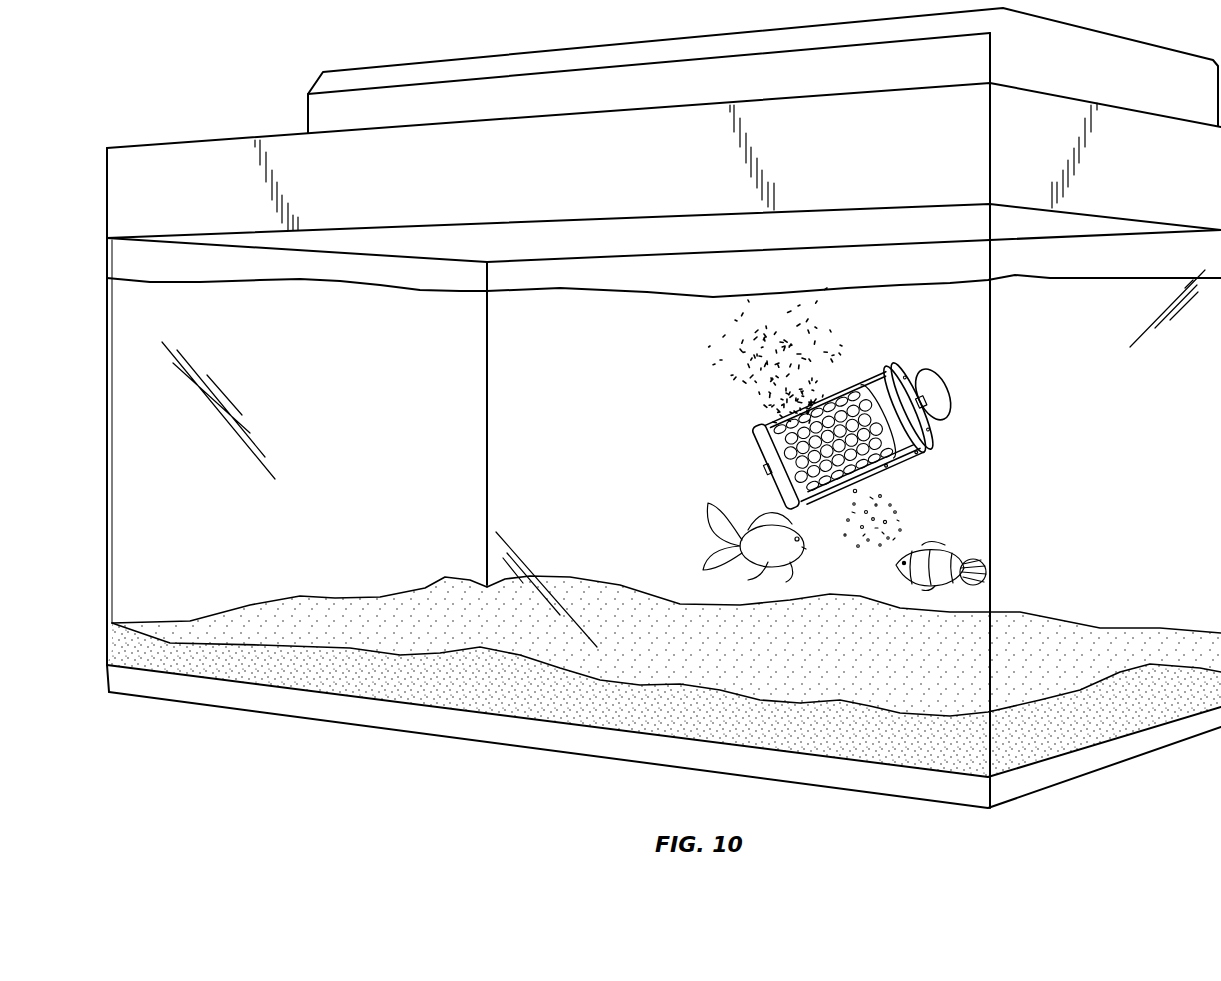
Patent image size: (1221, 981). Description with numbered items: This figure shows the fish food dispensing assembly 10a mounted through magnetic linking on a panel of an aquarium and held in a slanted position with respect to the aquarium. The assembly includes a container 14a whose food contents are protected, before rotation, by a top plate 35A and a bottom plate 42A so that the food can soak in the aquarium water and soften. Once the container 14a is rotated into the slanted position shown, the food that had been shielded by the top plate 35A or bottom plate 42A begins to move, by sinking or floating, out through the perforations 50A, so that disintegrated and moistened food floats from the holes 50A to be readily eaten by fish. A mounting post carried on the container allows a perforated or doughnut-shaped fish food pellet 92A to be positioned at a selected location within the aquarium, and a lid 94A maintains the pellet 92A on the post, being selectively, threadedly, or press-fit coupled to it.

The dispensing assembly 10a is at (735, 388).
The container 14a is at (762, 436).
The top plate 35A is at (782, 484).
The bottom plate 42A is at (920, 467).
The perforations 50A is at (833, 500).
The fish food pellet 92A is at (908, 395).
The lid 94A is at (945, 388).